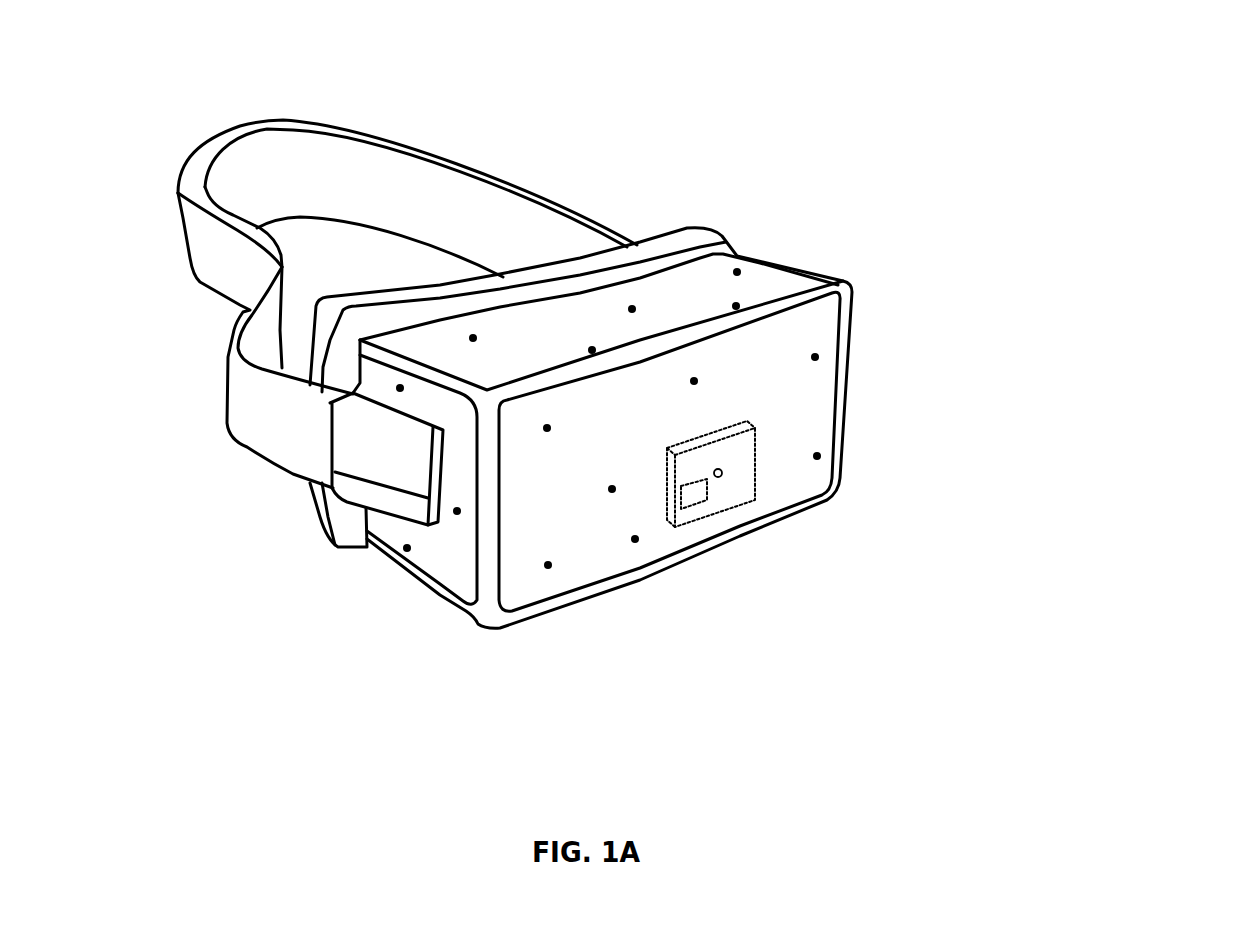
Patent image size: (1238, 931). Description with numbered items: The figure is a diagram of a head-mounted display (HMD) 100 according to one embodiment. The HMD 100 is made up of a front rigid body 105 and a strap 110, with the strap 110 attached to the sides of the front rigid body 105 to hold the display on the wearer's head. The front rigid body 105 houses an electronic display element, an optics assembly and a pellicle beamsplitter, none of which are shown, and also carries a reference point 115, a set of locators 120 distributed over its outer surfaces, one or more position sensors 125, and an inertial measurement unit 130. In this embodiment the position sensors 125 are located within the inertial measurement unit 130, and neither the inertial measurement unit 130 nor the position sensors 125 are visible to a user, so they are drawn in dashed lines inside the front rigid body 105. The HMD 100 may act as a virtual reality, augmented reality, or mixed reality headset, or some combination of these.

The head-mounted display 100 is at (67, 40).
The front rigid body 105 is at (849, 288).
The strap 110 is at (520, 190).
The reference point 115 is at (723, 478).
The locators 120 is at (820, 458).
The position sensors 125 is at (693, 495).
The inertial measurement unit 130 is at (755, 472).